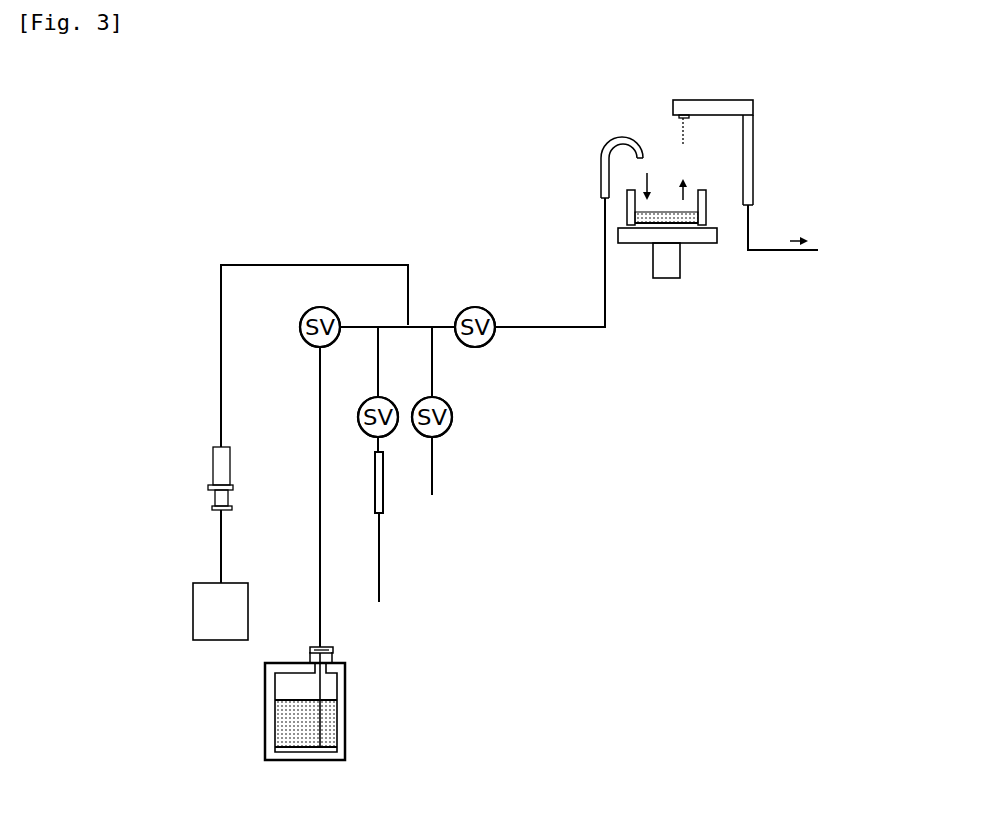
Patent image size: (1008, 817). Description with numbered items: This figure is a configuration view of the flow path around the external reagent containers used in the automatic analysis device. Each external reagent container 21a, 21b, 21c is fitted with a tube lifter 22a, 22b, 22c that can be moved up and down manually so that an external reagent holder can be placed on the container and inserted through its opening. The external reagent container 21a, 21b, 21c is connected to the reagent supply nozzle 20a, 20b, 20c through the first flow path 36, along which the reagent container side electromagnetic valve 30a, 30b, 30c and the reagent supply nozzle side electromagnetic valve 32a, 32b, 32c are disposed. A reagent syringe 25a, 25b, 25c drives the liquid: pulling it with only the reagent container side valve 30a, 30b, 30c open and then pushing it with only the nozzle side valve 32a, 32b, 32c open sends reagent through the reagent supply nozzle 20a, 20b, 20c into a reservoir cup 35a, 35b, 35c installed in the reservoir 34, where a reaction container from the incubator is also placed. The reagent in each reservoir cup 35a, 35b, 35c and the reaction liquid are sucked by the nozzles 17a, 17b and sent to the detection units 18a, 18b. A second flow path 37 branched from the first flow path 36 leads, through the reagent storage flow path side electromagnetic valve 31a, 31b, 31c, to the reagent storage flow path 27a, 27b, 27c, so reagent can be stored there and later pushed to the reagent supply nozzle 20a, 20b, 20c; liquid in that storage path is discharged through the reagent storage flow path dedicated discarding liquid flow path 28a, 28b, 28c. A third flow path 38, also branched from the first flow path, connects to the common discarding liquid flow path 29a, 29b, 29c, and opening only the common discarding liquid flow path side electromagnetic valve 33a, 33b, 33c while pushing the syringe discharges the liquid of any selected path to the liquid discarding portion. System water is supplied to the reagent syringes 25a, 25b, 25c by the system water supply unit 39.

The nozzle 17a is at (783, 133).
The nozzle 17b is at (753, 107).
The detection unit 18a is at (832, 233).
The detection unit 18b is at (832, 233).
The reagent supply nozzle 20a is at (533, 214).
The reagent supply nozzle 20b is at (533, 214).
The reagent supply nozzle 20c is at (603, 145).
The external reagent container 21a is at (215, 706).
The external reagent container 21b is at (215, 706).
The external reagent container 21c is at (270, 745).
The tube lifter 22a is at (426, 641).
The tube lifter 22b is at (426, 641).
The tube lifter 22c is at (332, 652).
The reagent syringe 25a is at (126, 515).
The reagent syringe 25b is at (126, 515).
The reagent syringe 25c is at (215, 483).
The reagent storage flow path 27a is at (490, 493).
The reagent storage flow path 27b is at (490, 493).
The reagent storage flow path 27c is at (380, 493).
The reagent storage flow path dedicated discarding liquid flow path 28a is at (486, 557).
The reagent storage flow path dedicated discarding liquid flow path 28b is at (486, 557).
The reagent storage flow path dedicated discarding liquid flow path 28c is at (379, 580).
The common discarding liquid flow path 29a is at (545, 467).
The common discarding liquid flow path 29b is at (545, 467).
The common discarding liquid flow path 29c is at (433, 487).
The reagent container side electromagnetic valve 30a is at (380, 282).
The reagent container side electromagnetic valve 30b is at (380, 282).
The reagent container side electromagnetic valve 30c is at (330, 307).
The reagent storage flow path side electromagnetic valve 31a is at (468, 349).
The reagent storage flow path side electromagnetic valve 31b is at (468, 349).
The reagent storage flow path side electromagnetic valve 31c is at (393, 397).
The reagent supply nozzle side electromagnetic valve 32a is at (571, 367).
The reagent supply nozzle side electromagnetic valve 32b is at (571, 367).
The reagent supply nozzle side electromagnetic valve 32c is at (477, 347).
The common discarding liquid flow path side electromagnetic valve 33a is at (535, 432).
The common discarding liquid flow path side electromagnetic valve 33b is at (535, 432).
The common discarding liquid flow path side electromagnetic valve 33c is at (445, 433).
The reservoir 34 is at (685, 242).
The reservoir cup 35a is at (683, 255).
The reservoir cup 35b is at (683, 255).
The reservoir cup 35c is at (640, 227).
The first flow path 36 is at (318, 547).
The second flow path 37 is at (378, 370).
The third flow path 38 is at (432, 360).
The system water supply unit 39 is at (195, 618).